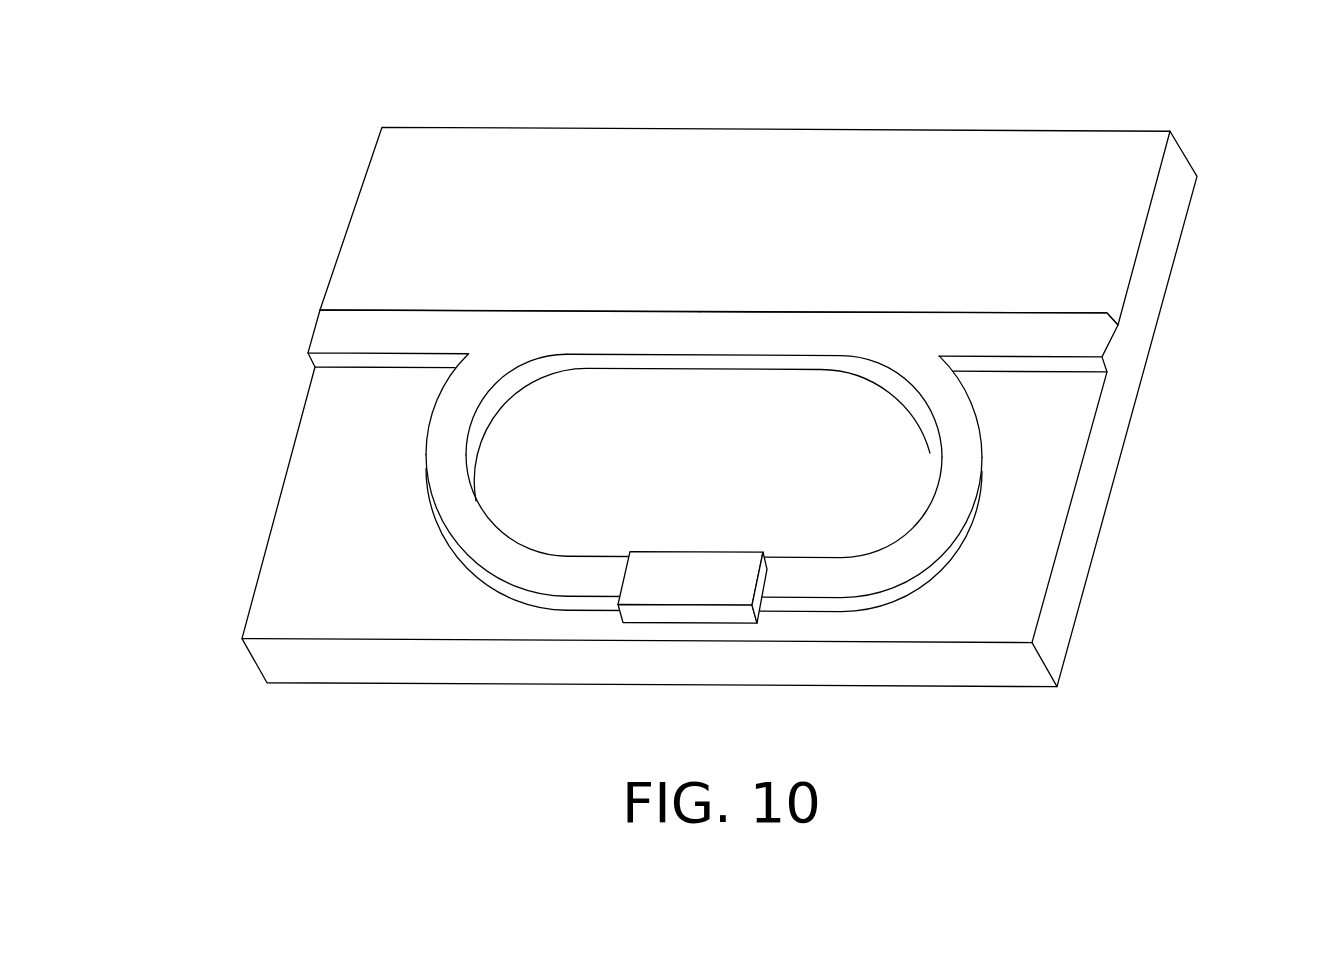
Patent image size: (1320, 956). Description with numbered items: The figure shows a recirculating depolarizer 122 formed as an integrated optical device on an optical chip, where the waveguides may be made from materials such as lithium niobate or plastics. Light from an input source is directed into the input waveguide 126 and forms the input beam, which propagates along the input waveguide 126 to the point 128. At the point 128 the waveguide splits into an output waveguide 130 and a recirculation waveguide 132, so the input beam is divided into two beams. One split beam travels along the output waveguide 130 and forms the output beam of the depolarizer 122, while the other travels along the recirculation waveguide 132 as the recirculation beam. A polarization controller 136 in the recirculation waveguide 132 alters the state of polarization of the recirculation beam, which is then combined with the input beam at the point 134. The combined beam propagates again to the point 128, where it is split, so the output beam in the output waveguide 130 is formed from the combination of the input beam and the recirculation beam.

The depolarizer 122 is at (835, 78).
The input waveguide 126 is at (376, 300).
The point 128 is at (896, 333).
The output waveguide 130 is at (1075, 305).
The recirculation waveguide 132 is at (424, 434).
The point 134 is at (491, 330).
The polarization controller 136 is at (680, 640).